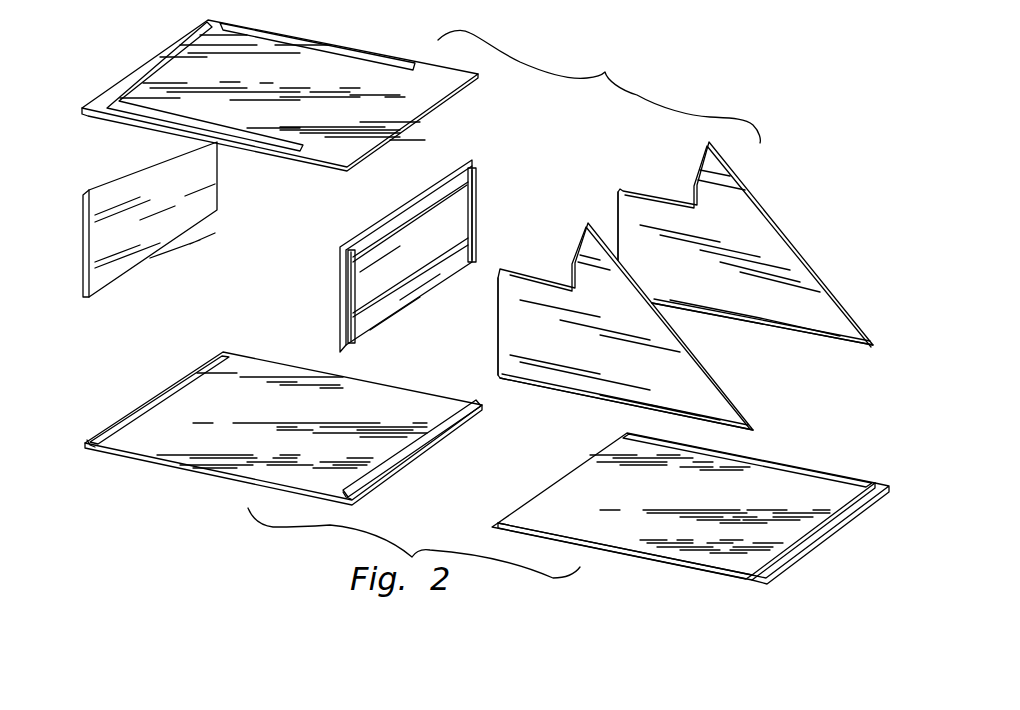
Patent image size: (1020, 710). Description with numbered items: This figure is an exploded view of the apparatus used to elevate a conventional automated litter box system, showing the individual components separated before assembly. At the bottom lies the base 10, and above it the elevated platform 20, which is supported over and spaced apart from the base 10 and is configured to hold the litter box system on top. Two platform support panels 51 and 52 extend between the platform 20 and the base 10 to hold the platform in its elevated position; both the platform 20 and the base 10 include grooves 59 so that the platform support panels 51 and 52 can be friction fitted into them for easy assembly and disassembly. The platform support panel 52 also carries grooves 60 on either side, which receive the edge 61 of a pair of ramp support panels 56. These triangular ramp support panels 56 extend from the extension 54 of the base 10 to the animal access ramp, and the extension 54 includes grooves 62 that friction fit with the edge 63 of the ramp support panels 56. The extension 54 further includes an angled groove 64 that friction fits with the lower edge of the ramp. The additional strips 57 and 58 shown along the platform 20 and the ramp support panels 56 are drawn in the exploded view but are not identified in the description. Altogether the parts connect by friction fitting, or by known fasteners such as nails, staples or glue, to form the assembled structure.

The base 10 is at (200, 457).
The elevated platform 20 is at (337, 140).
The platform support panel 51 is at (165, 233).
The platform support panel 52 is at (420, 213).
The extension 54 is at (560, 500).
The ramp support panel 56 is at (798, 290).
The top rail 57 is at (340, 43).
The edge rail of triangular panel 58 is at (793, 243).
The grooves 59 is at (90, 118).
The grooves 60 is at (477, 222).
The edge 61 is at (618, 216).
The grooves 62 is at (813, 470).
The edge 63 is at (813, 335).
The angled groove 64 is at (817, 552).